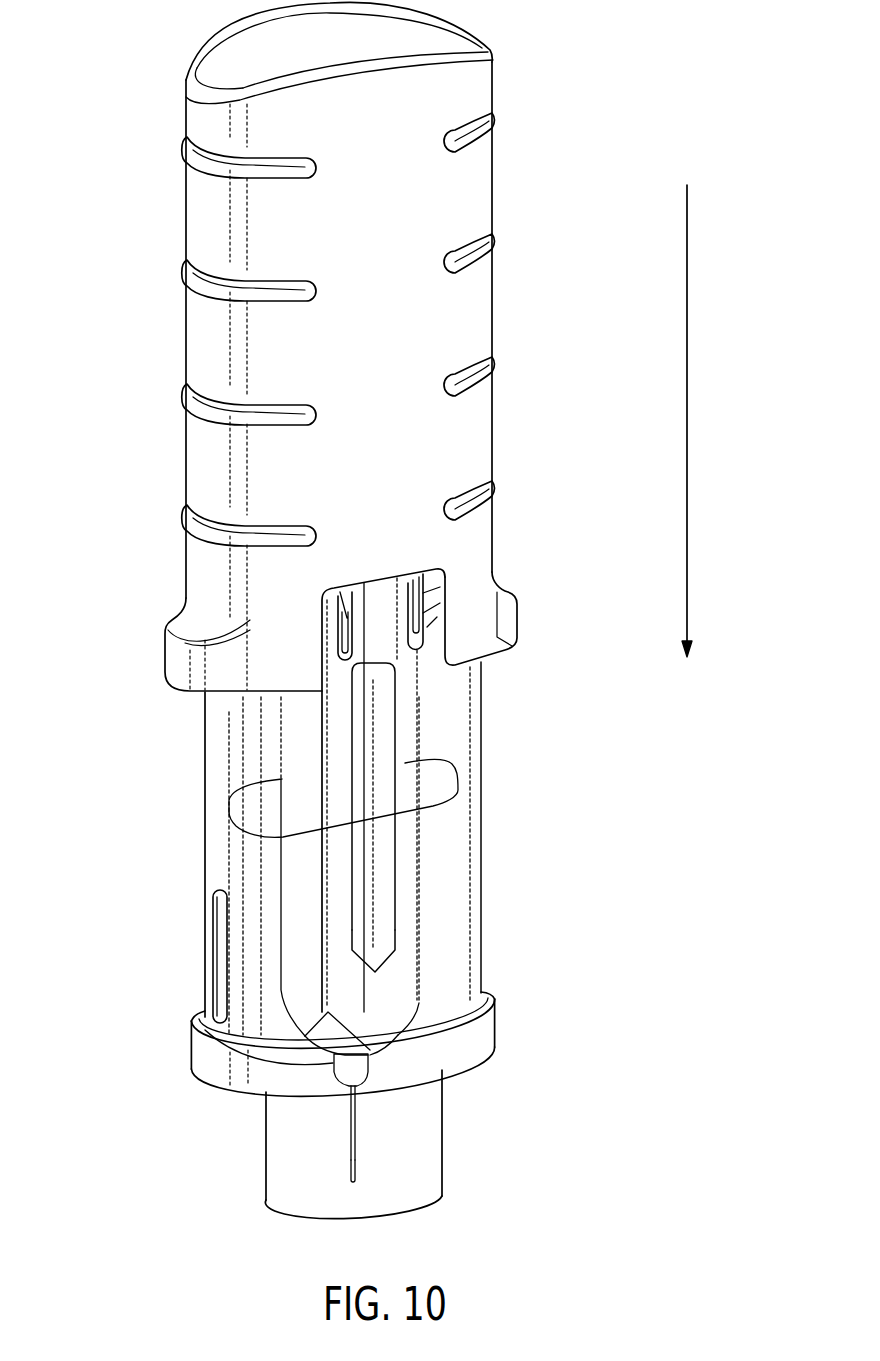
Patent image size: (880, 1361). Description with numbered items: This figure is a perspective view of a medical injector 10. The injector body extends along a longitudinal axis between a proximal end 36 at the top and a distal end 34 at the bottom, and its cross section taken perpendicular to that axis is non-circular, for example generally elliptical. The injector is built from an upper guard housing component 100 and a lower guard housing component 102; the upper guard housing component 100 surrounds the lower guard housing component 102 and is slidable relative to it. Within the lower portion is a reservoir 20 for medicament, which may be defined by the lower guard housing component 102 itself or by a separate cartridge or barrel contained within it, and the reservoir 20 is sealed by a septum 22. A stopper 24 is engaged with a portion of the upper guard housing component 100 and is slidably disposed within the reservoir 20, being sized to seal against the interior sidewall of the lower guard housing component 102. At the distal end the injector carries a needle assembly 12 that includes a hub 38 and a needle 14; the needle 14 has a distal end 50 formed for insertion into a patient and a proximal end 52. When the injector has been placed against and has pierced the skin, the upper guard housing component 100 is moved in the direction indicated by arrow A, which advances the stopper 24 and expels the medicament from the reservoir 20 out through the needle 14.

The medical injector 10 is at (80, 277).
The proximal end 36 is at (120, 47).
The upper guard housing component 100 is at (185, 118).
The lower guard housing component 102 is at (205, 805).
The proximal end 52 is at (515, 973).
The reservoir 20 is at (387, 772).
The stopper 24 is at (368, 932).
The septum 22 is at (161, 1045).
The hub 38 is at (360, 1065).
The needle assembly 12 is at (486, 1108).
The distal end 34 is at (198, 1203).
The needle 14 is at (350, 1143).
The distal end 50 is at (373, 1180).
The arrow A is at (688, 428).